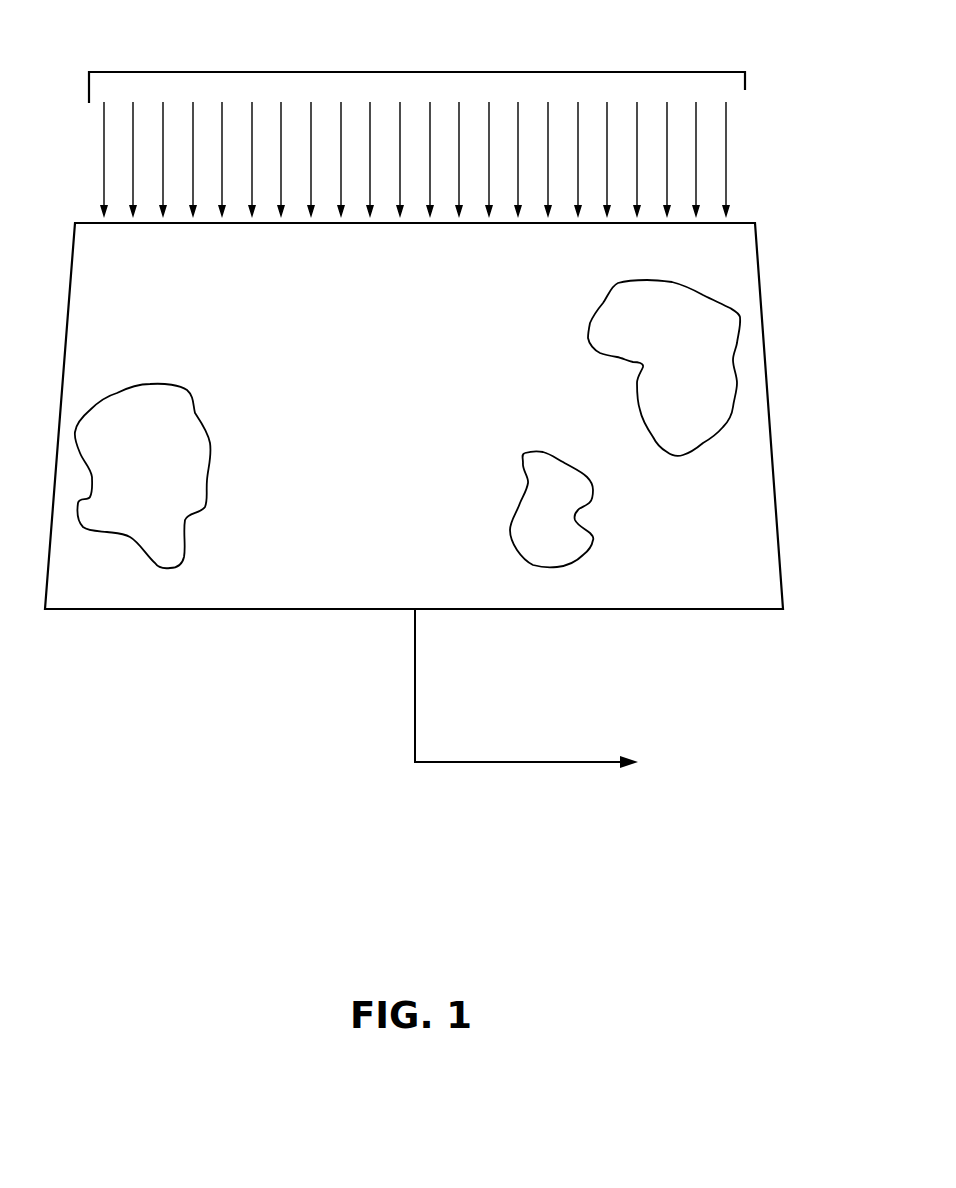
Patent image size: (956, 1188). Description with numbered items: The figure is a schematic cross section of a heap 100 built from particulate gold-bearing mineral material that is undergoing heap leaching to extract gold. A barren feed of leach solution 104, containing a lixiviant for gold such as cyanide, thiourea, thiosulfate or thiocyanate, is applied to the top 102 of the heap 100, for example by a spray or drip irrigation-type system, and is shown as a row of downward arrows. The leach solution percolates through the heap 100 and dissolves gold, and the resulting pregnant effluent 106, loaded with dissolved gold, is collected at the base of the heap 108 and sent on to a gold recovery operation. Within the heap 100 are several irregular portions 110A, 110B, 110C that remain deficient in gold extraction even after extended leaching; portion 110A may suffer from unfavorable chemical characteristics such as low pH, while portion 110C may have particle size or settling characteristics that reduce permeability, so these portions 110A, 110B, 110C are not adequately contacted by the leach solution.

The heap 100 is at (766, 328).
The top of the heap 102 is at (742, 222).
The feed of leach solution 104 is at (385, 73).
The pregnant effluent 106 is at (518, 763).
The base of the heap 108 is at (645, 610).
The under-leached portion 110A is at (197, 413).
The under-leached portion 110B is at (593, 538).
The under-leached portion 110C is at (656, 280).